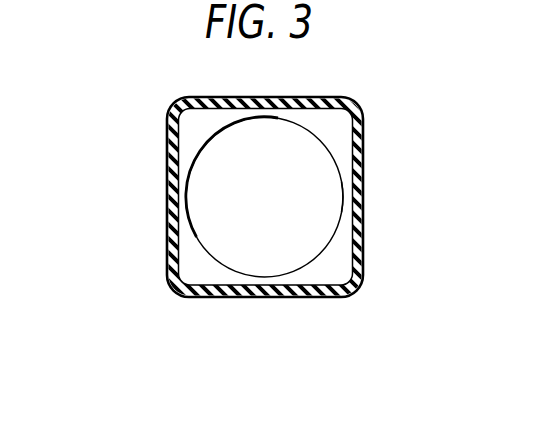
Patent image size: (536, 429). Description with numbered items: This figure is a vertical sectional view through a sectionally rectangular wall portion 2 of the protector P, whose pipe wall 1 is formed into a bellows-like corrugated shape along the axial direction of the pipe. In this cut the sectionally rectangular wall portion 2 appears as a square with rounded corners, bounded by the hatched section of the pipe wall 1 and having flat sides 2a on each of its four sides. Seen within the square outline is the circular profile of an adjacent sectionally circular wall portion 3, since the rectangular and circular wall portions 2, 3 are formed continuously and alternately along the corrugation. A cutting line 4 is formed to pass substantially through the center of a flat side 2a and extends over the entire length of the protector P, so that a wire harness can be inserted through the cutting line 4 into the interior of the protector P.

The pipe wall 1 is at (362, 122).
The sectionally rectangular wall portion 2 is at (168, 186).
The flat side 2a is at (363, 232).
The sectionally circular wall portion 3 is at (192, 228).
The cutting line 4 is at (348, 198).
The protector P is at (156, 118).